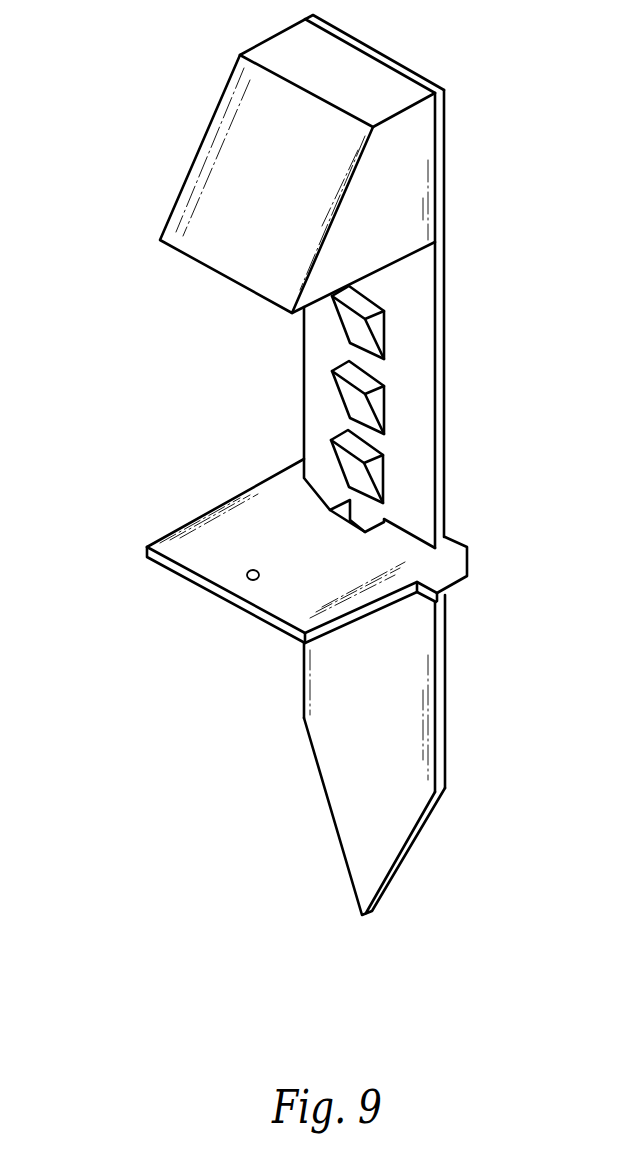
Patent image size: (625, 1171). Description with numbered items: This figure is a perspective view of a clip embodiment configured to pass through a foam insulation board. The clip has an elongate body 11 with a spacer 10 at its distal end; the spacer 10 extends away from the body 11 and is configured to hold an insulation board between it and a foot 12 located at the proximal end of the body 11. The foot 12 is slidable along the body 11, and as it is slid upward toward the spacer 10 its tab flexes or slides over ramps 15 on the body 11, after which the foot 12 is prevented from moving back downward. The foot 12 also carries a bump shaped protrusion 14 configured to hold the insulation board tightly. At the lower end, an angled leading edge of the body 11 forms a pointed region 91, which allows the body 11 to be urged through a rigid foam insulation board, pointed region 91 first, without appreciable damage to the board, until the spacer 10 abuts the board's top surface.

The spacer 10 is at (245, 188).
The elongate body 11 is at (401, 566).
The foot 12 is at (210, 557).
The bump shaped protrusion 14 is at (250, 582).
The ramps 15 is at (350, 323).
The pointed region 91 is at (343, 863).